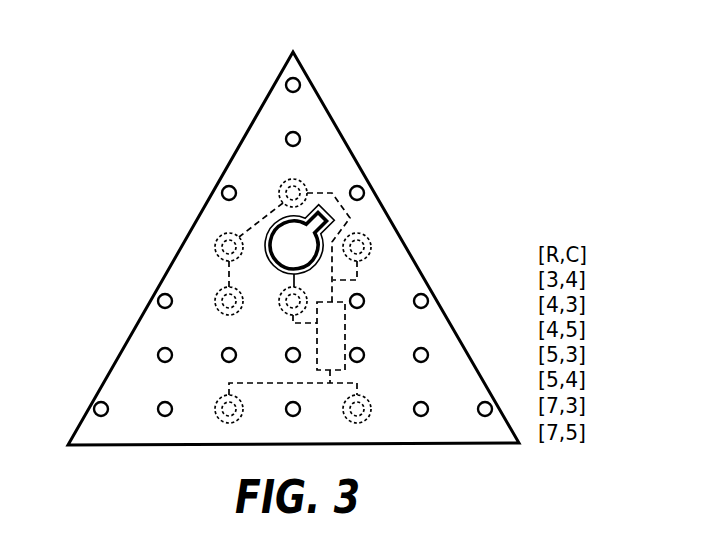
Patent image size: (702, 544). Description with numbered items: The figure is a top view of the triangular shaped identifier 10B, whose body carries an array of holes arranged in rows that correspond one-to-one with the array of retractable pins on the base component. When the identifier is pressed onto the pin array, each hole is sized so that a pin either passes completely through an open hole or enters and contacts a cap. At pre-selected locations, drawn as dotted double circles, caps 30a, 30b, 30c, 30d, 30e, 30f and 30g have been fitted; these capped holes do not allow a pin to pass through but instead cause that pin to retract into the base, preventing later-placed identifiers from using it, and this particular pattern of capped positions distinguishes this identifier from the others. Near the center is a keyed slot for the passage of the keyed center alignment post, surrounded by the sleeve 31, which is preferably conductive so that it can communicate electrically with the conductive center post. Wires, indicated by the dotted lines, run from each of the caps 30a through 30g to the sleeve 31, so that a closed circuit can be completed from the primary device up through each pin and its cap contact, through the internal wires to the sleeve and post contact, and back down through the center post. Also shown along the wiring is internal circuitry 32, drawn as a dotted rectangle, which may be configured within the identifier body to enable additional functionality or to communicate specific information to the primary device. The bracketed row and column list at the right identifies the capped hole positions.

The triangular shaped identifier 10B is at (348, 143).
The sleeve 31 is at (330, 220).
The internal circuitry 32 is at (345, 338).
The cap 30a is at (372, 243).
The cap 30b is at (276, 304).
The cap 30c is at (370, 397).
The cap 30d is at (217, 397).
The cap 30e is at (220, 289).
The cap 30f is at (218, 236).
The cap 30g is at (281, 186).